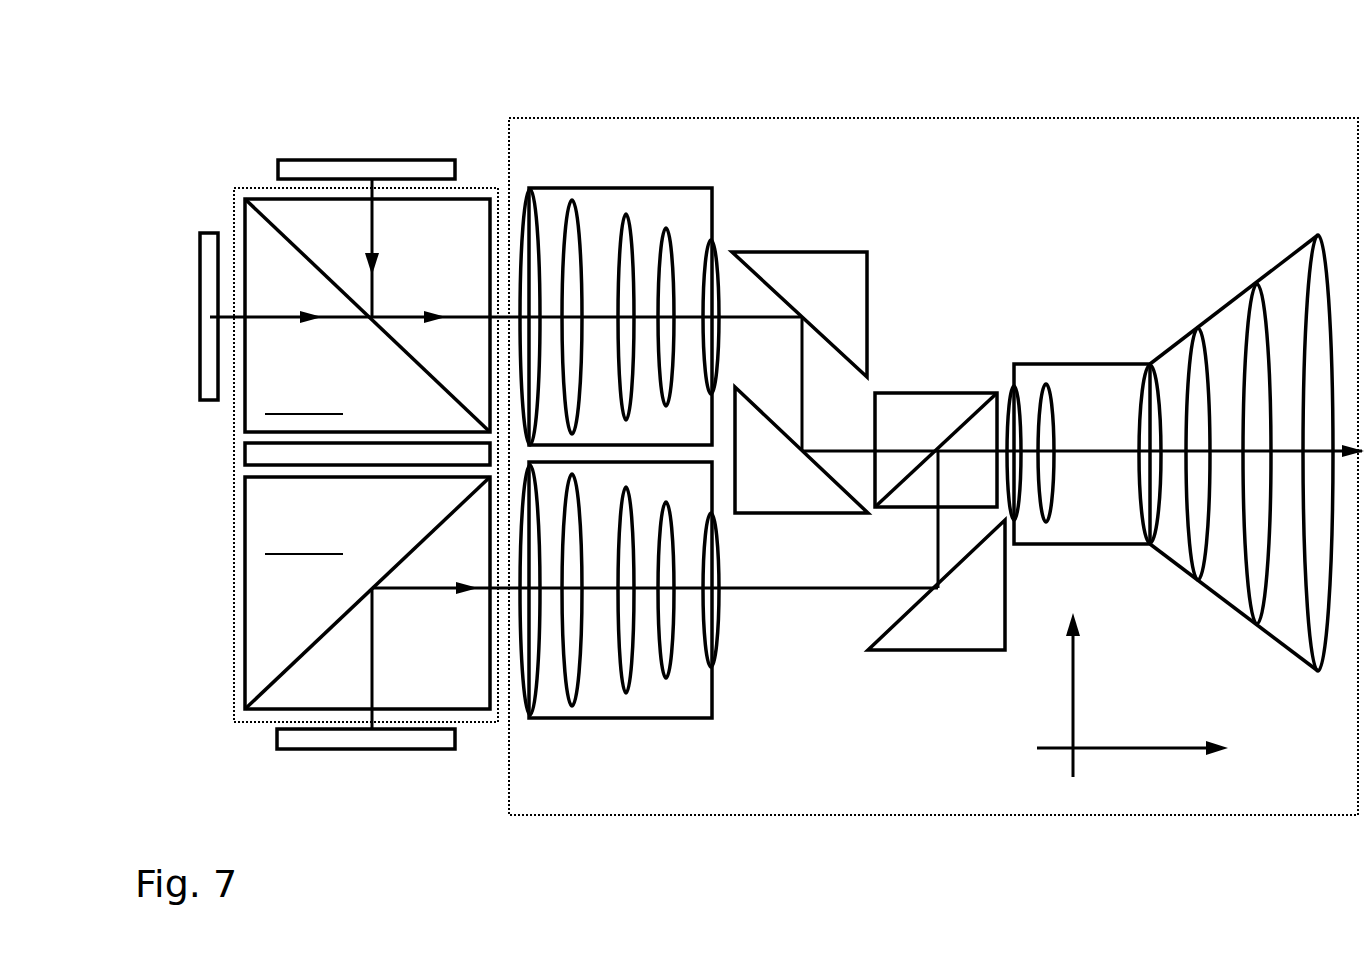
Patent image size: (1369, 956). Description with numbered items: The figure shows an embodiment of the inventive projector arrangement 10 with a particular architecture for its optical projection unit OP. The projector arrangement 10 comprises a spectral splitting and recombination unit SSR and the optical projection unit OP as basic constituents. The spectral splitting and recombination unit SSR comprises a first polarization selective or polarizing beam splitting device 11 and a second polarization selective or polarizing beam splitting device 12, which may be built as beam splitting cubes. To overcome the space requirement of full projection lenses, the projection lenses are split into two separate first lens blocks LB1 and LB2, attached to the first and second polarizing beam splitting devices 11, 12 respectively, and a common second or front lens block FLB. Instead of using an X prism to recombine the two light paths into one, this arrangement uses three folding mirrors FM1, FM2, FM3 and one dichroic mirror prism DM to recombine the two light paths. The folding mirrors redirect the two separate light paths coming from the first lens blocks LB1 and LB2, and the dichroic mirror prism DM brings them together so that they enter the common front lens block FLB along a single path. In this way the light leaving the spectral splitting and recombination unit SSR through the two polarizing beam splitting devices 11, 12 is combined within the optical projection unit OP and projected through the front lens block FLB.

The projector arrangement 10 is at (240, 81).
The first polarizing beam splitting device 11 is at (347, 521).
The second polarizing beam splitting device 12 is at (347, 381).
The spectral splitting and recombination unit SSR is at (242, 725).
The optical projection unit OP is at (957, 117).
The first lens block LB1 is at (698, 224).
The first lens block LB2 is at (703, 501).
The folding mirror FM1 is at (855, 293).
The folding mirror FM2 is at (823, 503).
The folding mirror FM3 is at (995, 641).
The dichroic mirror prism DM is at (945, 429).
The front lens block FLB is at (1082, 264).